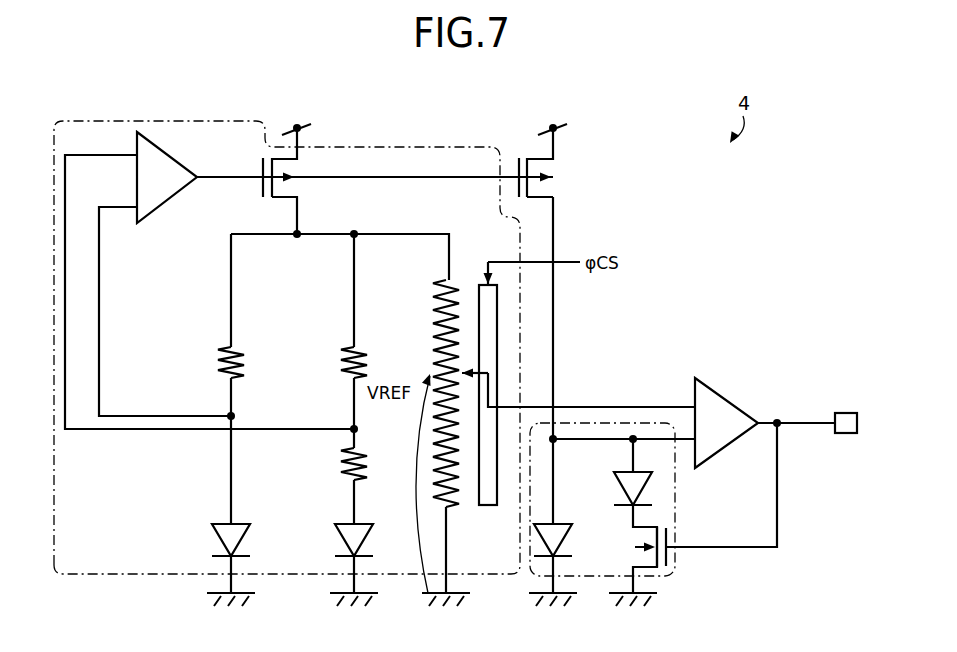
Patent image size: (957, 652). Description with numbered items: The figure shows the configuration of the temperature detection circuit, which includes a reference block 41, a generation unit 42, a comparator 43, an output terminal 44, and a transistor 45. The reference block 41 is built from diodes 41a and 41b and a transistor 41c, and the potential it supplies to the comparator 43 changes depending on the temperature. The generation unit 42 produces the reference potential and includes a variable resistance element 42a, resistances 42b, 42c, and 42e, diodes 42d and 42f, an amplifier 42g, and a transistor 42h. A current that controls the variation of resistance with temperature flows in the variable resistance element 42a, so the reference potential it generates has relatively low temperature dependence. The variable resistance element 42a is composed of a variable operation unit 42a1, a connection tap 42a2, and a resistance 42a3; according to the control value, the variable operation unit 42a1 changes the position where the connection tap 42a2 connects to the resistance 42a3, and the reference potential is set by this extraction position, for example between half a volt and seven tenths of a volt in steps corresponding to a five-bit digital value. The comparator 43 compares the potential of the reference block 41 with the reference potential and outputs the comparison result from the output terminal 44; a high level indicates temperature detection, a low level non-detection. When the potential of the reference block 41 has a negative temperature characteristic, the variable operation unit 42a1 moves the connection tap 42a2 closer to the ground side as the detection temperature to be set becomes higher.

The reference block 41 is at (670, 575).
The diode 41a is at (567, 515).
The diode 41b is at (661, 489).
The transistor 41c is at (676, 523).
The generation unit 42 is at (232, 116).
The variable resistance element 42a is at (532, 374).
The variable operation unit 42a1 is at (497, 307).
The connection tap 42a2 is at (468, 362).
The resistance 42a3 is at (429, 304).
The resistance 42b is at (331, 350).
The resistance 42c is at (333, 457).
The diode 42d is at (326, 519).
The resistance 42e is at (208, 350).
The diode 42f is at (206, 519).
The amplifier 42g is at (150, 214).
The transistor 42h is at (257, 191).
The comparator 43 is at (733, 402).
The output terminal 44 is at (847, 413).
The transistor 45 is at (579, 151).